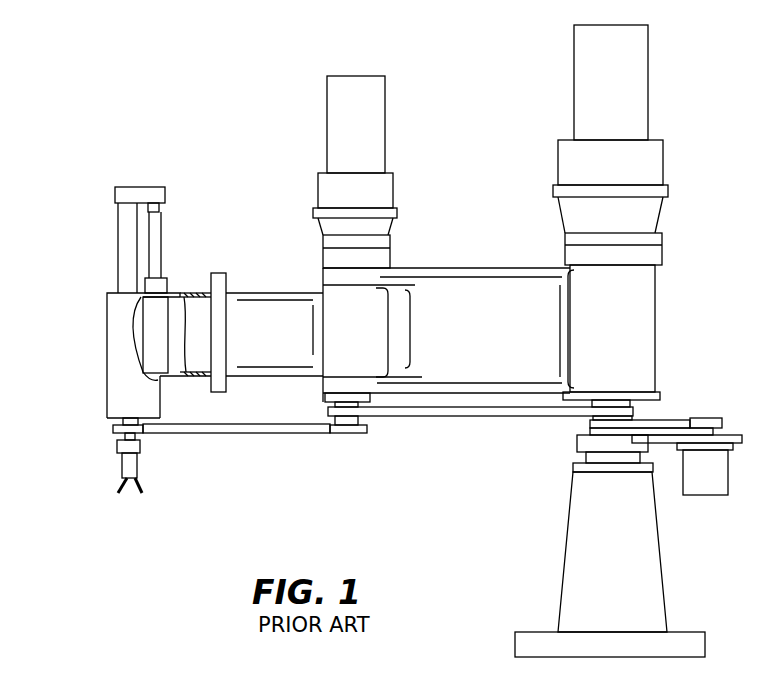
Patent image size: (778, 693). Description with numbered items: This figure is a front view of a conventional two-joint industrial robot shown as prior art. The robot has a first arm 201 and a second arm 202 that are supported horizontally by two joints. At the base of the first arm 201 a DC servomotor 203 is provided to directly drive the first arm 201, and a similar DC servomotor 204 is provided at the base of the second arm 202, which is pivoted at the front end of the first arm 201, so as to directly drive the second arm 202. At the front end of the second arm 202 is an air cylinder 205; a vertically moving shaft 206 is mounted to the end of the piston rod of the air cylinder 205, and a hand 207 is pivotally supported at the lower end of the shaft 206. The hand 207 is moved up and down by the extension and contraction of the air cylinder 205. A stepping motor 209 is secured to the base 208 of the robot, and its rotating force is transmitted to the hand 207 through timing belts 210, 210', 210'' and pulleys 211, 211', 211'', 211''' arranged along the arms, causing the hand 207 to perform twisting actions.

The first arm 201 is at (478, 290).
The second arm 202 is at (260, 315).
The DC servomotor 203 is at (585, 88).
The DC servomotor 204 is at (368, 120).
The air cylinder 205 is at (155, 350).
The vertically moving shaft 206 is at (128, 252).
The hand 207 is at (135, 467).
The base 208 is at (575, 555).
The stepping motor 209 is at (708, 487).
The timing belt 210 is at (661, 391).
The timing belt 210' is at (480, 447).
The timing belt 210'' is at (236, 464).
The pulley 211 is at (734, 399).
The pulley 211' is at (571, 431).
The pulley 211'' is at (363, 463).
The pulley 211''' is at (90, 444).